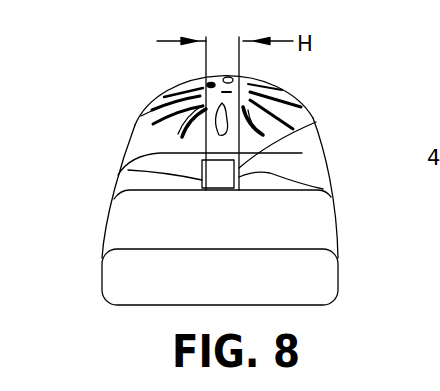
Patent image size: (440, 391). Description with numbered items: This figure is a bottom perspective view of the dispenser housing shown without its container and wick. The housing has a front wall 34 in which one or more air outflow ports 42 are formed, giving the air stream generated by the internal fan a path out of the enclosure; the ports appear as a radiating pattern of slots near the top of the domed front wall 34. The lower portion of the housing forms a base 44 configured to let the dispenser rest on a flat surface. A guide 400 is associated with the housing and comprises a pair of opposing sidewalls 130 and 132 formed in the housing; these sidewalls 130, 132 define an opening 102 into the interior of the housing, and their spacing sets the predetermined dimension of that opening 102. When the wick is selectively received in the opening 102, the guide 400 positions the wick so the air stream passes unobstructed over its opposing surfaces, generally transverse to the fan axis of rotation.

The front wall 34 is at (147, 130).
The air outflow ports 42 is at (175, 108).
The base 44 is at (133, 290).
The opening 102 is at (316, 122).
The sidewall 130 is at (132, 170).
The sidewall 132 is at (323, 188).
The guide 400 is at (87, 251).